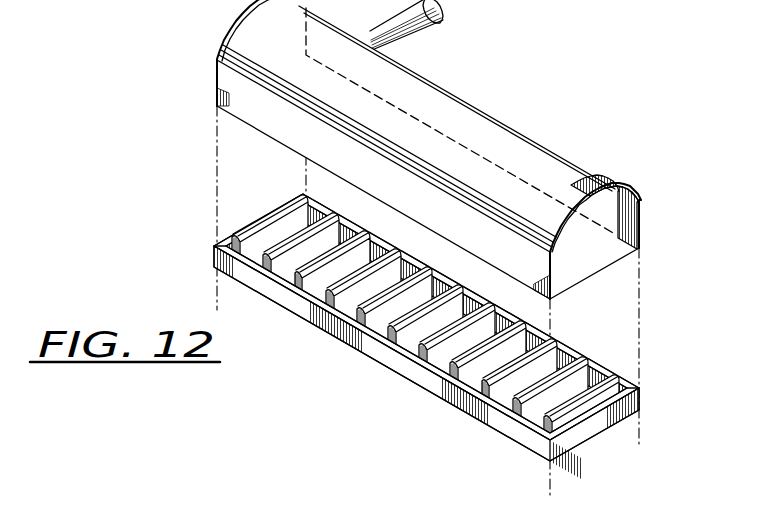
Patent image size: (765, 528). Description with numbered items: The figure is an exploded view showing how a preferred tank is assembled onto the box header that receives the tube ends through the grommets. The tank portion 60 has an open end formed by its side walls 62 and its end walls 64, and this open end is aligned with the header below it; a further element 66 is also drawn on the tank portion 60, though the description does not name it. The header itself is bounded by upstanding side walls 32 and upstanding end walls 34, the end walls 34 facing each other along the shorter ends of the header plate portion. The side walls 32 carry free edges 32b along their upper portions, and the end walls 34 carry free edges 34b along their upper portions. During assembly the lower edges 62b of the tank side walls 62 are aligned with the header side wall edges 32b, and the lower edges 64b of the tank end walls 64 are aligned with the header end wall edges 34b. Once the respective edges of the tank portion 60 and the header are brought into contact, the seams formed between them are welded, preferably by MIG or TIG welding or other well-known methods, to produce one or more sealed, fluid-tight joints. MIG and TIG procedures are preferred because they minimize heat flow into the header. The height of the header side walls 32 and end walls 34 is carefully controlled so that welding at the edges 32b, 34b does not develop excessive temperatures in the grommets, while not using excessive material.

The tank portion 60 is at (426, 149).
The tank side walls 62 is at (463, 128).
The lower edges of the tank side walls 62b is at (270, 133).
The tank end walls 64 is at (268, 30).
The lower edges of the tank end walls 64b is at (250, 86).
The inlet tube 66 is at (450, 19).
The side walls 32 is at (595, 372).
The free edges of the side walls 32b is at (407, 353).
The end walls 34 is at (224, 236).
The free edges of the end walls 34b is at (272, 211).